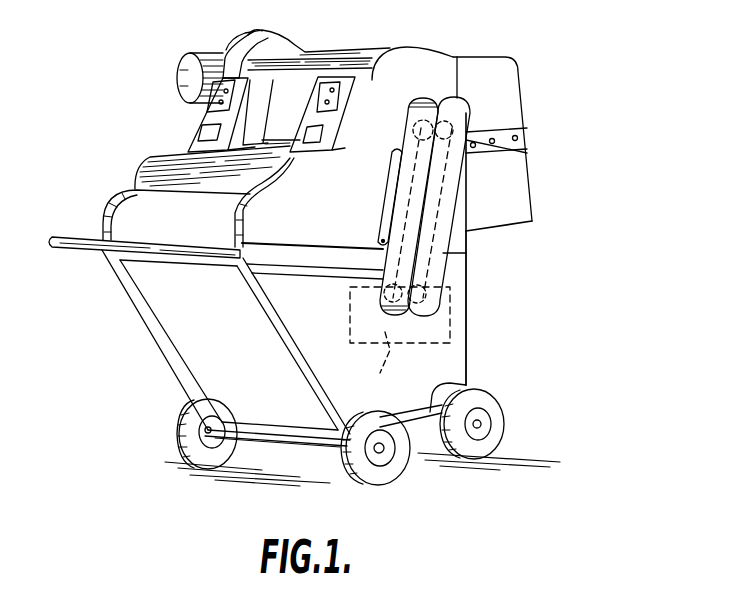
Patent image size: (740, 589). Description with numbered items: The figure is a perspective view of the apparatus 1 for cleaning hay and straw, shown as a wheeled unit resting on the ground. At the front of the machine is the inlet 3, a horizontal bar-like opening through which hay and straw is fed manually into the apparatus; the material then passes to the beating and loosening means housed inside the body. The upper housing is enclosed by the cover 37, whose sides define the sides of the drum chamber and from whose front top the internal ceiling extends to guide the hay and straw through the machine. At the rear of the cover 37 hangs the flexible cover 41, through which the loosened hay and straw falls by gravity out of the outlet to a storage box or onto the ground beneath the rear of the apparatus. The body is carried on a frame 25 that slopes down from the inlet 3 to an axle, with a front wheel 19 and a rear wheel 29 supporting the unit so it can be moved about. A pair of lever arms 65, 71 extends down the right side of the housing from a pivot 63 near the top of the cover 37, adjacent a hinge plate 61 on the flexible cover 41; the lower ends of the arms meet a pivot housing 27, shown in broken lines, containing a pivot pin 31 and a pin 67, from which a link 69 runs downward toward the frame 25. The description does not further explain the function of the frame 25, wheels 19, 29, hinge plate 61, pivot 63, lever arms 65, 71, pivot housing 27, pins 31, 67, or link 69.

The apparatus 1 is at (433, 75).
The inlet 3 is at (120, 218).
The front wheel 19 is at (381, 463).
The frame 25 is at (176, 323).
The pivot housing 27 is at (452, 340).
The rear wheel 29 is at (403, 332).
The pivot pin 31 is at (383, 296).
The cover 37 is at (413, 63).
The flexible cover 41 is at (500, 197).
The hinge plate 61 is at (530, 157).
The pivot 63 is at (470, 129).
The lever arm 65 is at (445, 237).
The pin 67 is at (426, 298).
The link 69 is at (370, 365).
The actuating lever 71 is at (400, 200).